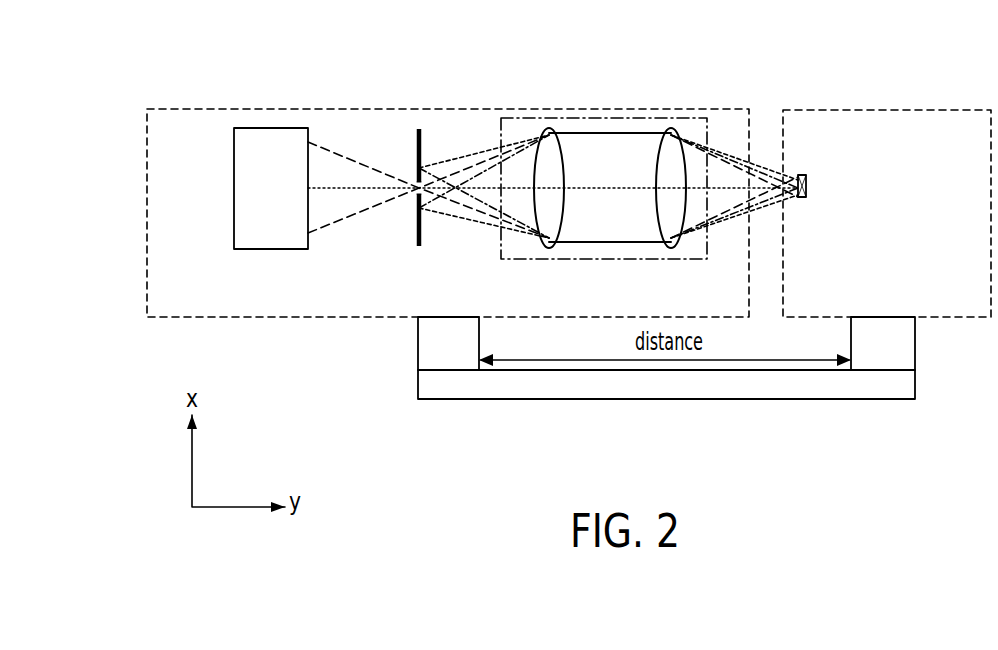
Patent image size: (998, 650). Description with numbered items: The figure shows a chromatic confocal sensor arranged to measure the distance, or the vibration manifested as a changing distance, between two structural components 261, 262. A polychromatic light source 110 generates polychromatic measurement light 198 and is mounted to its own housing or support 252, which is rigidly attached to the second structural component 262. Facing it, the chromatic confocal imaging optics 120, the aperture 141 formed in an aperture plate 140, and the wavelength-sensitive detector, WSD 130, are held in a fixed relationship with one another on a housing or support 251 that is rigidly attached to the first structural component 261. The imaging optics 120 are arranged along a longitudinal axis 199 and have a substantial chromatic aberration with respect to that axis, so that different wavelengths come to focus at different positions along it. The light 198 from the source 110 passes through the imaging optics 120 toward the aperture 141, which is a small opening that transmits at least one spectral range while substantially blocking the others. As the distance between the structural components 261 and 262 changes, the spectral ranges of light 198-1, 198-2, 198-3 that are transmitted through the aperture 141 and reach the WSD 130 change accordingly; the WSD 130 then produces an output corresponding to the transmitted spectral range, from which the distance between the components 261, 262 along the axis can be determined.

The light source 110 is at (807, 183).
The chromatic confocal imaging optics 120 is at (633, 118).
The WSD 130 is at (273, 135).
The aperture plate 140 is at (419, 128).
The aperture 141 is at (411, 199).
The polychromatic measurement light 198 is at (740, 138).
The spectral range of light 198-1 is at (443, 161).
The spectral range of light 198-2 is at (331, 148).
The spectral range of light 198-3 is at (477, 203).
The longitudinal axis 199 is at (363, 186).
The support 251 is at (507, 118).
The support 252 is at (933, 109).
The first structural component 261 is at (418, 343).
The second structural component 262 is at (897, 347).